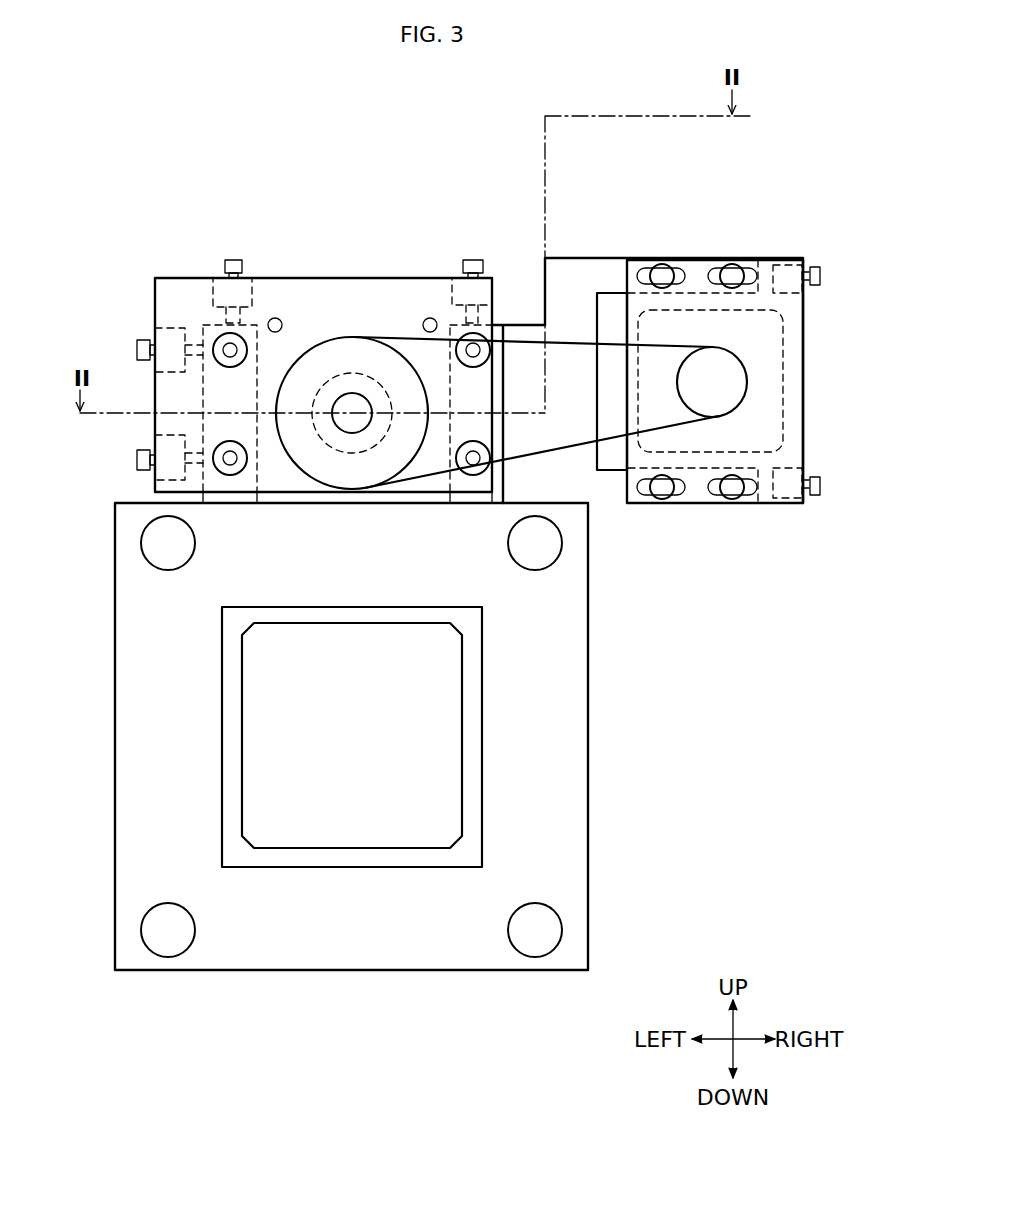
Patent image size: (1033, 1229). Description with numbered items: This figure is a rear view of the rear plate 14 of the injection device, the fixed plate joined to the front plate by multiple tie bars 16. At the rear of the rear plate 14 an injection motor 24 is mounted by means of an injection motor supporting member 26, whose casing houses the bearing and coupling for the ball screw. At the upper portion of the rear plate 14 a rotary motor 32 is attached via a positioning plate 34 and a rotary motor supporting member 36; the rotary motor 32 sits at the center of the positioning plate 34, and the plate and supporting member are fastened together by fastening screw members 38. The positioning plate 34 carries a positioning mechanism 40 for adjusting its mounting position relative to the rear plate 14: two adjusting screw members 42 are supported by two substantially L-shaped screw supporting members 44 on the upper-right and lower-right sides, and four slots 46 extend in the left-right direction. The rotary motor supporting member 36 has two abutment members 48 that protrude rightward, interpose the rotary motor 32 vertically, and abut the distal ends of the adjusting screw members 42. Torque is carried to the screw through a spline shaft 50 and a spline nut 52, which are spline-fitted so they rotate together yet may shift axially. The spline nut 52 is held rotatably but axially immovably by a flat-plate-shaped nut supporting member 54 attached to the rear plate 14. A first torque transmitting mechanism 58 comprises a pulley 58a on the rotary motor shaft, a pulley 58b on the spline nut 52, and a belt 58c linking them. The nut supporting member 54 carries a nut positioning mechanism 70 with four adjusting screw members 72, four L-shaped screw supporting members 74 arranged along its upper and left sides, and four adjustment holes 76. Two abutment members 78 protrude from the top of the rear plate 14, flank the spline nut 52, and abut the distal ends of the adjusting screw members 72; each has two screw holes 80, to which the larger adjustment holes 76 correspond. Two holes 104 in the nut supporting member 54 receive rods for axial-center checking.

The rear plate 14 is at (560, 750).
The tie bars 16 is at (170, 557).
The injection motor 24 is at (242, 723).
The injection motor supporting member 26 is at (222, 775).
The rotary motor 32 is at (790, 425).
The positioning plate 34 is at (800, 383).
The rotary motor supporting member 36 is at (607, 483).
The fastening screw members 38 is at (725, 267).
The positioning mechanism 40 is at (805, 262).
The adjusting screw members 42 is at (822, 285).
The screw supporting members 44 is at (786, 572).
The slots 46 is at (650, 272).
The abutment members 48 is at (722, 572).
The spline shaft 50 is at (356, 432).
The spline nut 52 is at (337, 478).
The nut supporting member 54 is at (322, 278).
The first torque transmitting mechanism 58 is at (566, 335).
The pulley 58a is at (725, 383).
The pulley 58b is at (355, 337).
The belt 58c is at (573, 447).
The nut positioning mechanism 70 is at (226, 258).
The adjusting screw members 72 is at (95, 512).
The screw supporting members 74 is at (448, 290).
The adjustment holes 76 is at (232, 358).
The abutment members 78 is at (280, 493).
The screw holes 80 is at (232, 445).
The holes 104 is at (283, 322).